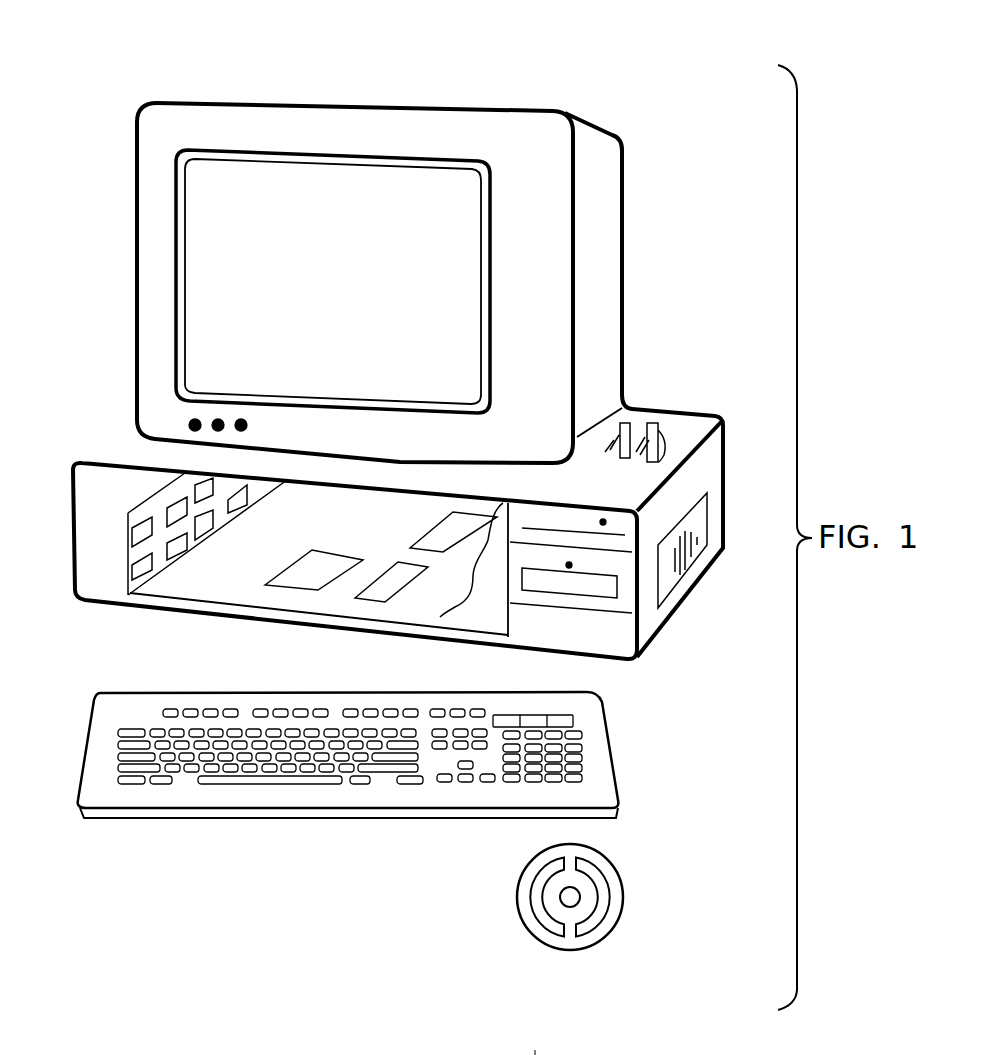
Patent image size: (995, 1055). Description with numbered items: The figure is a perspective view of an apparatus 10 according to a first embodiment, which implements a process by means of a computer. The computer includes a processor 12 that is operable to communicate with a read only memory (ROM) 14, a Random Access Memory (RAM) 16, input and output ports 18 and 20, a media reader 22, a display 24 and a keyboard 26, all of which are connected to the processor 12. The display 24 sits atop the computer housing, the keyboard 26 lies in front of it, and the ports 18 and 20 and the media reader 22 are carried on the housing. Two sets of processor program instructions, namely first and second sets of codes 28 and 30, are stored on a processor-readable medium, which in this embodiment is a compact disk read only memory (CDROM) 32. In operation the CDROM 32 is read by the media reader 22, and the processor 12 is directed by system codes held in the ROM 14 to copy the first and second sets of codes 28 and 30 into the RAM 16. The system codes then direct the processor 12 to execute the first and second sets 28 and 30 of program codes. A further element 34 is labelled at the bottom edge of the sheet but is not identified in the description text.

The computer system 10 is at (362, 60).
The memory 12 is at (288, 580).
The processor 14 is at (388, 585).
The input/output interface 16 is at (130, 474).
The network interface card 18 is at (623, 422).
The modem card 20 is at (663, 422).
The disk drive 22 is at (612, 588).
The display 24 is at (440, 290).
The keyboard 26 is at (272, 773).
The pointing device button 28 is at (532, 897).
The pointing device button 30 is at (607, 897).
The pointing device 32 is at (575, 844).
The printer 34 is at (536, 1049).